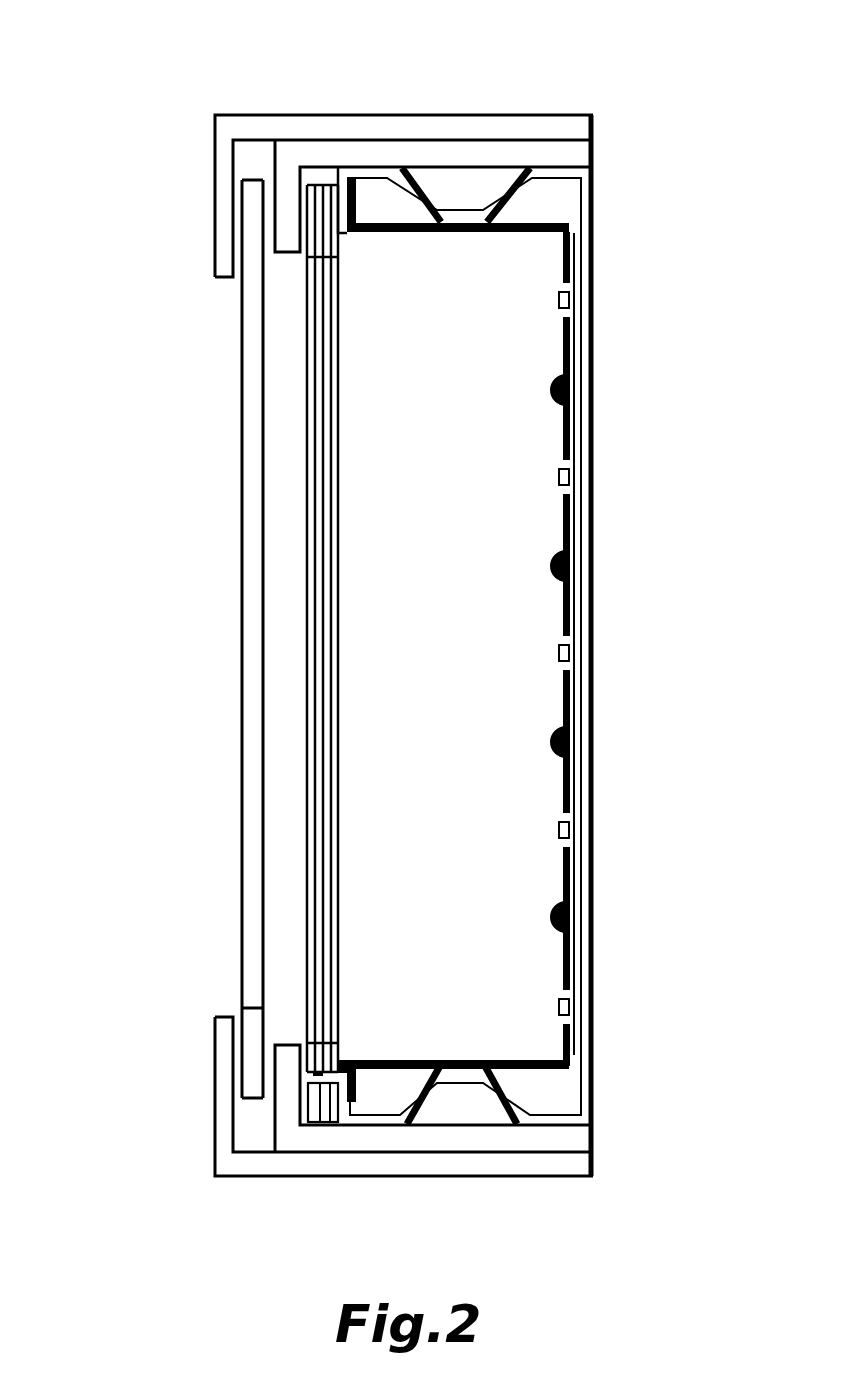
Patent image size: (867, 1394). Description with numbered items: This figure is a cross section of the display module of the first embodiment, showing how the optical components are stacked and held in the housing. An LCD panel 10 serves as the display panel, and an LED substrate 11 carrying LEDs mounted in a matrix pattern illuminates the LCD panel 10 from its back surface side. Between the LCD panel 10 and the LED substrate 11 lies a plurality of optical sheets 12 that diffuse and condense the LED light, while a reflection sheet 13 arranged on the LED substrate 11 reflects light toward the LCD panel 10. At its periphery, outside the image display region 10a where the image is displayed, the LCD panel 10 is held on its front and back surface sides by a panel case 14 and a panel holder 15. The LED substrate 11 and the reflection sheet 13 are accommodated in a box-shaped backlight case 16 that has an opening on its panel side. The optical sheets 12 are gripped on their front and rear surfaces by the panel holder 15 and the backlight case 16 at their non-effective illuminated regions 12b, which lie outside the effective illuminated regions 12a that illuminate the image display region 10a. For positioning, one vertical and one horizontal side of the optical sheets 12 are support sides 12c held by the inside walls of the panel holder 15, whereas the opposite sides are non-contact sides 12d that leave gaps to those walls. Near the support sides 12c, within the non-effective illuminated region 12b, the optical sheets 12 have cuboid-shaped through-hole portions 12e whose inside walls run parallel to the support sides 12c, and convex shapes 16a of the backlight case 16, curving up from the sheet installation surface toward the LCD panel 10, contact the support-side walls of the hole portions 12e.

The LCD panel 10 is at (240, 705).
The image display region 10a is at (252, 543).
The LED substrate 11 is at (568, 300).
The optical sheets 12 is at (305, 417).
The effective illuminated region 12a is at (322, 830).
The non-effective illuminated region 12b is at (322, 222).
The support side 12c is at (328, 1088).
The non-contact side 12d is at (322, 205).
The hole portion 12e is at (320, 1075).
The reflection sheet 13 is at (390, 221).
The panel case 14 is at (280, 125).
The panel holder 15 is at (465, 1137).
The backlight case 16 is at (517, 183).
The convex shape 16a is at (332, 1105).